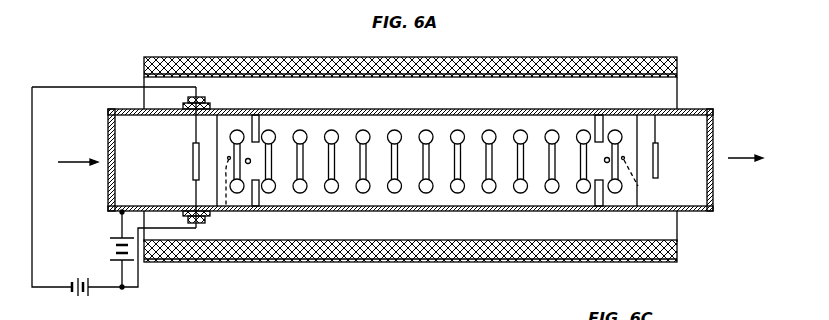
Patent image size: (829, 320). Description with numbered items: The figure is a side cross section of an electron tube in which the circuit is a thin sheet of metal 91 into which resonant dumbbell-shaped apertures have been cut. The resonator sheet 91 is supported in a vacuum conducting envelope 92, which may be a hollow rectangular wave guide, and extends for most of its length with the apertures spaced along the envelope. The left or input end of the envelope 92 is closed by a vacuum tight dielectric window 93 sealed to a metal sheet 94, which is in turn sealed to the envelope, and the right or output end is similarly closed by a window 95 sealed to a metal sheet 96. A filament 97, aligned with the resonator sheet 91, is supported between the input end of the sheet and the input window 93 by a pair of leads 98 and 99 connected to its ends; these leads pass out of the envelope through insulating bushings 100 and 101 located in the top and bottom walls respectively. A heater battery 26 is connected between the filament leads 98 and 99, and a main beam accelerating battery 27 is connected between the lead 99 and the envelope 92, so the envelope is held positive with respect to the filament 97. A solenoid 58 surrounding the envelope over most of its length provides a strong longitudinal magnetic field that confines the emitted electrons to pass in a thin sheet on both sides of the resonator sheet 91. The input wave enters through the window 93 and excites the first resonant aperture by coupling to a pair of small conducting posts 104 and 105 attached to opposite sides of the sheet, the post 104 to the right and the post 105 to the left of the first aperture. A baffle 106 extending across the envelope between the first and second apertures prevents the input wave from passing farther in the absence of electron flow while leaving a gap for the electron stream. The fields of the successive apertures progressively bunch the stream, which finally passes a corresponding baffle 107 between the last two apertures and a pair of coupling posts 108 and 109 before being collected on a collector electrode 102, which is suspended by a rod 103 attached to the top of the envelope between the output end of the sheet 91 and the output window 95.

The heater battery 26 is at (81, 297).
The main beam accelerating battery 27 is at (109, 244).
The solenoid 58 is at (250, 57).
The resonator sheet 91 is at (410, 149).
The envelope 92 is at (500, 112).
The input window 93 is at (106, 177).
The metal sheet 94 is at (106, 121).
The output window 95 is at (714, 133).
The metal sheet 96 is at (716, 202).
The filament 97 is at (192, 163).
The filament lead 98 is at (193, 133).
The filament lead 99 is at (193, 187).
The insulating bushing 100 is at (208, 103).
The insulating bushing 101 is at (205, 218).
The collector electrode 102 is at (659, 158).
The rod 103 is at (661, 130).
The coupling post 104 is at (251, 160).
The coupling post 105 is at (228, 208).
The baffle 106 is at (259, 118).
The baffle 107 is at (595, 120).
The coupling post 108 is at (604, 160).
The coupling post 109 is at (638, 186).